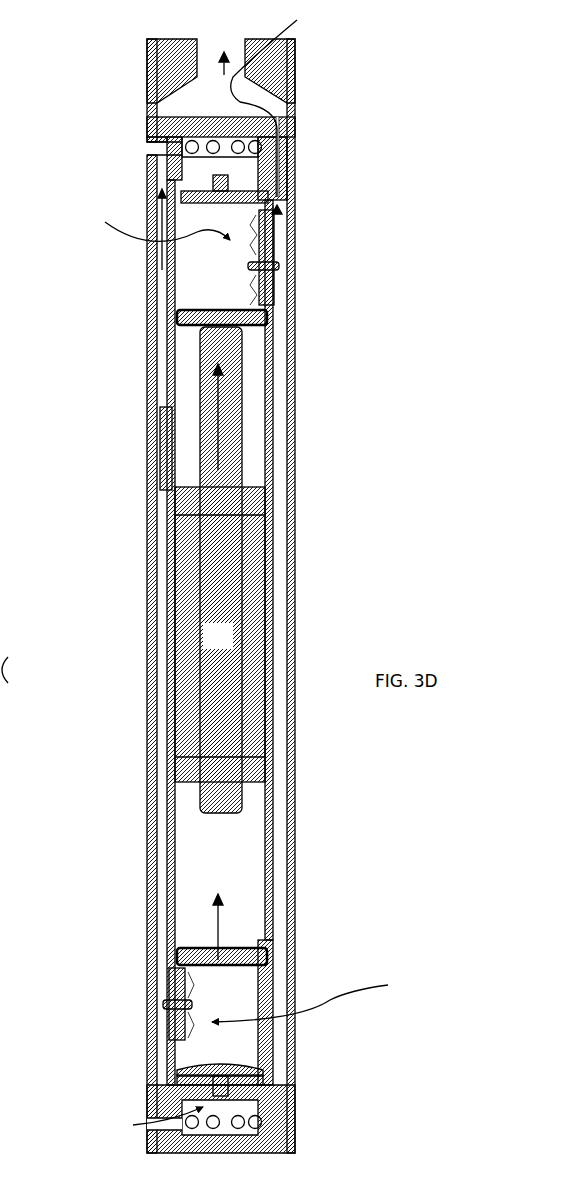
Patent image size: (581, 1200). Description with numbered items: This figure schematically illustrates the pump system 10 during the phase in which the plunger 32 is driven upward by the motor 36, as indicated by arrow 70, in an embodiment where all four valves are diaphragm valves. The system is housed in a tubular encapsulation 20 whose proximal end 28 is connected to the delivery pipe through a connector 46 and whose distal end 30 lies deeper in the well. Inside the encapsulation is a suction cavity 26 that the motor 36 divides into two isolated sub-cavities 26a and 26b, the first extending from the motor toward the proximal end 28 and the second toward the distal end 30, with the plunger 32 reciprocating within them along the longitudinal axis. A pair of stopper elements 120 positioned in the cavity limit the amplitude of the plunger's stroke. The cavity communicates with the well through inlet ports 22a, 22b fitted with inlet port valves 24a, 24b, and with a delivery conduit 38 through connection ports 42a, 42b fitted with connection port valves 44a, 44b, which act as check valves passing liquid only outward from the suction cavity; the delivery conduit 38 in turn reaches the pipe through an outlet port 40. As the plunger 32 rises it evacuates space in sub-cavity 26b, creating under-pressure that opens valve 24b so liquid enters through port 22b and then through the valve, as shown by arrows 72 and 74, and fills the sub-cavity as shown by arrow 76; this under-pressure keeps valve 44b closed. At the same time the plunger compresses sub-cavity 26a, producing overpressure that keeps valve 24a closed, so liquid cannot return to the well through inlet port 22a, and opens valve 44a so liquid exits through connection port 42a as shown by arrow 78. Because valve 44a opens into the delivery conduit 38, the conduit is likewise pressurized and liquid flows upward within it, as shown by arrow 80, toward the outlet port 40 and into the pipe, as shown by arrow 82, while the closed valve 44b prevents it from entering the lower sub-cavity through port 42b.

The pump system 10 is at (291, 596).
The tubular encapsulation 20 is at (290, 506).
The inlet port 22a is at (138, 136).
The inlet port 22b is at (140, 1115).
The inlet port valve 24a is at (236, 180).
The inlet port valve 24b is at (190, 1066).
The suction cavity 26 is at (248, 887).
The sub-cavity 26a is at (193, 296).
The sub-cavity 26b is at (220, 994).
The proximal end 28 is at (241, 119).
The distal end 30 is at (320, 1143).
The plunger 32 is at (207, 646).
The motor 36 is at (194, 632).
The delivery conduit 38 is at (164, 847).
The outlet port 40 is at (282, 215).
The connection port 42a is at (142, 224).
The connection port 42b is at (316, 996).
The connection port valve 44a is at (270, 270).
The connection port valve 44b is at (168, 990).
The connector 46 is at (165, 55).
The arrow 70 is at (224, 407).
The arrow 72 is at (148, 1131).
The arrow 74 is at (170, 1085).
The arrow 76 is at (212, 902).
The arrow 78 is at (318, 242).
The arrow 80 is at (163, 203).
The arrow 82 is at (271, 109).
The stopper elements 120 is at (177, 314).